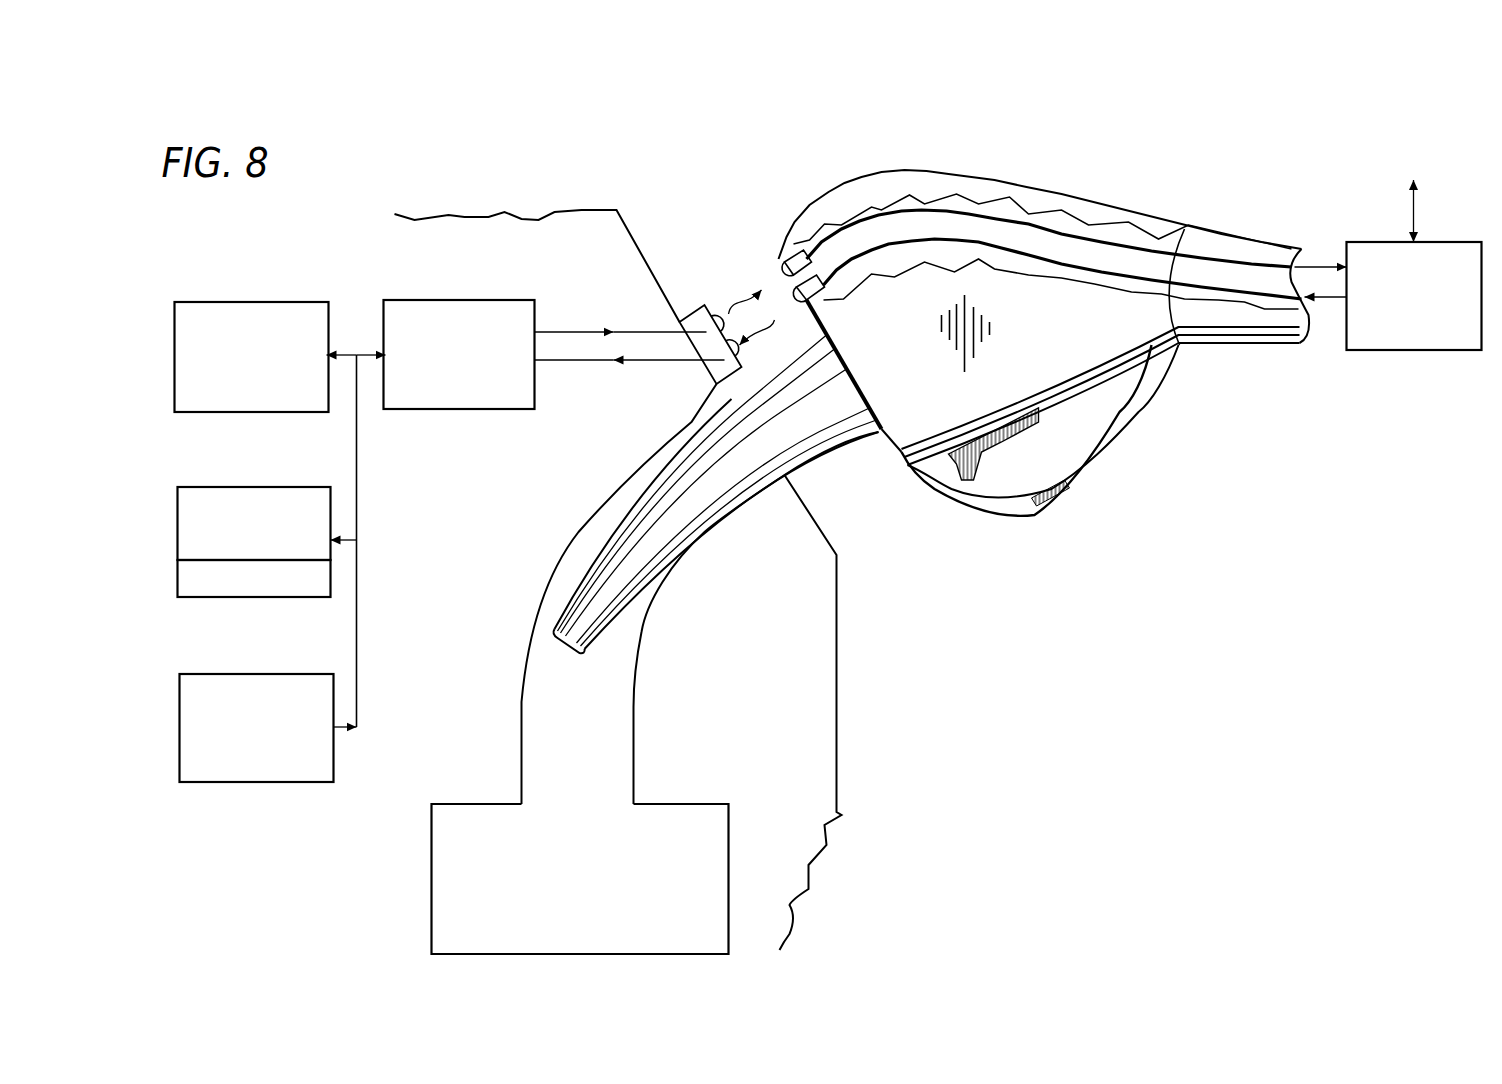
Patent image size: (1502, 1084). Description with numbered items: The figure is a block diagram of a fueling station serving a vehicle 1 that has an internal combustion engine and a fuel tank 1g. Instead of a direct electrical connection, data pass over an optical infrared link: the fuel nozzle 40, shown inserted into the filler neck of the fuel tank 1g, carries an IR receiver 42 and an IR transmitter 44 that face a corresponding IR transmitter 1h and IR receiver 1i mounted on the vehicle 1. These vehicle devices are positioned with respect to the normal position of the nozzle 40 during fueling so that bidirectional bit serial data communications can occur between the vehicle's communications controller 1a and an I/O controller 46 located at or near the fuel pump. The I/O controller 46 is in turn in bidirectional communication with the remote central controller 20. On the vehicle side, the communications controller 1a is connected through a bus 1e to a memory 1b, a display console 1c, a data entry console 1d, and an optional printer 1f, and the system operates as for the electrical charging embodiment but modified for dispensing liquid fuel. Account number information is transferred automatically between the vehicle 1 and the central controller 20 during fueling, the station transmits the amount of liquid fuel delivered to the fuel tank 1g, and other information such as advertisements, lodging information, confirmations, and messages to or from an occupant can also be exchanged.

The vehicle 1 is at (473, 200).
The communications controller 1a is at (425, 298).
The memory 1b is at (218, 300).
The display console 1c is at (222, 485).
The data entry console 1d is at (222, 672).
The bus 1e is at (356, 572).
The printer 1f is at (177, 583).
The fuel tank 1g is at (670, 797).
The IR transmitter 1h is at (711, 313).
The IR receiver 1i is at (733, 352).
The central controller 20 is at (1403, 165).
The fuel nozzle 40 is at (993, 170).
The IR receiver 42 is at (777, 268).
The IR transmitter 44 is at (788, 290).
The I/O controller 46 is at (1408, 349).